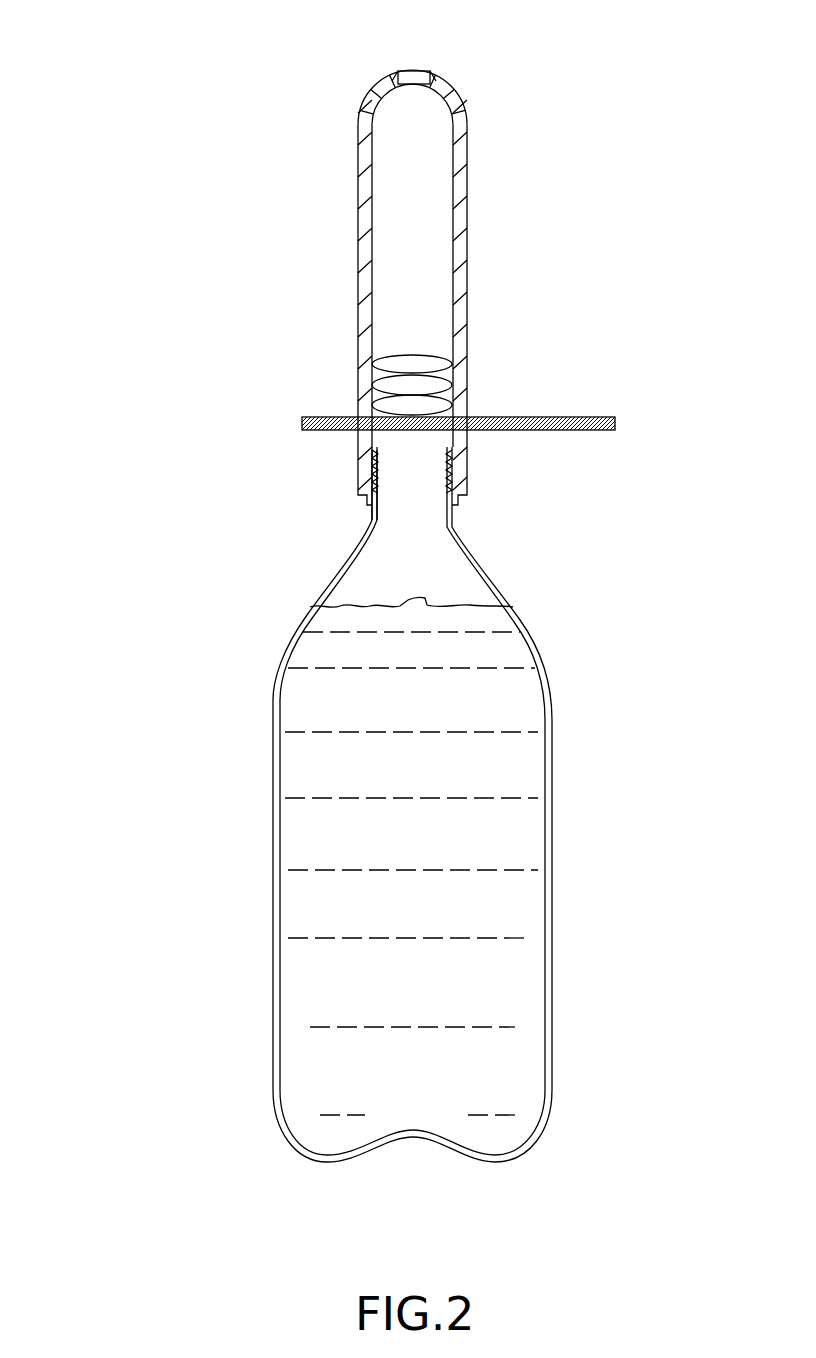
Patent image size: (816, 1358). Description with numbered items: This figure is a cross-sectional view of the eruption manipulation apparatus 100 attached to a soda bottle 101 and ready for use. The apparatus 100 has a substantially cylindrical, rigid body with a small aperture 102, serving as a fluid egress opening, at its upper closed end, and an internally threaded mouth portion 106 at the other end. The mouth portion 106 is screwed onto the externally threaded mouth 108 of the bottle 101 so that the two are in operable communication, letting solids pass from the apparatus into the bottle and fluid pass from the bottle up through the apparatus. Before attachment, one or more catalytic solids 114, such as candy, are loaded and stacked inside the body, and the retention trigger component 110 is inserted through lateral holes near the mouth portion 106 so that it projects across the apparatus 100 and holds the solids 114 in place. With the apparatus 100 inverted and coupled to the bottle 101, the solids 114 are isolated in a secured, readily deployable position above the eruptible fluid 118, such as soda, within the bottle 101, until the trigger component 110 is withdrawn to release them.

The eruption manipulation apparatus 100 is at (214, 227).
The soda bottle 101 is at (202, 815).
The small aperture 102 is at (423, 70).
The mouth portion 106 is at (463, 473).
The threaded mouth 108 is at (363, 450).
The retention trigger component 110 is at (600, 416).
The catalytic solids 114 is at (440, 358).
The eruptible fluid 118 is at (473, 603).